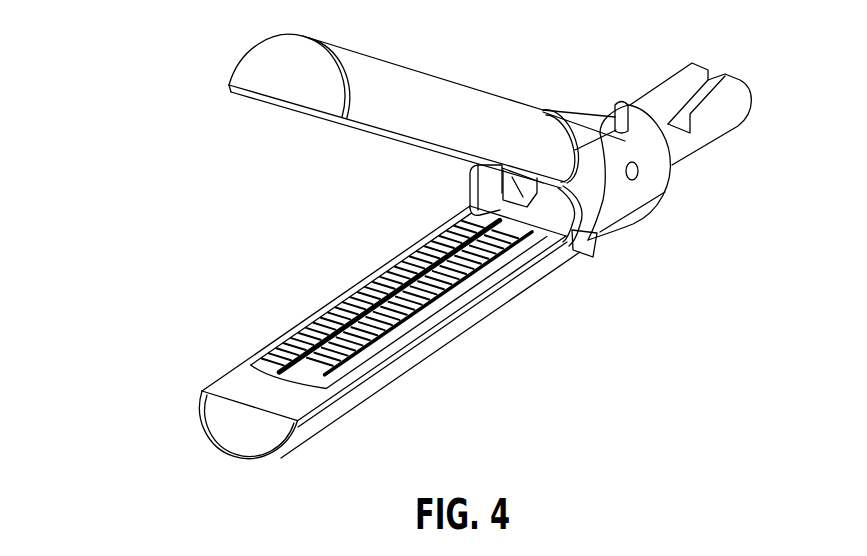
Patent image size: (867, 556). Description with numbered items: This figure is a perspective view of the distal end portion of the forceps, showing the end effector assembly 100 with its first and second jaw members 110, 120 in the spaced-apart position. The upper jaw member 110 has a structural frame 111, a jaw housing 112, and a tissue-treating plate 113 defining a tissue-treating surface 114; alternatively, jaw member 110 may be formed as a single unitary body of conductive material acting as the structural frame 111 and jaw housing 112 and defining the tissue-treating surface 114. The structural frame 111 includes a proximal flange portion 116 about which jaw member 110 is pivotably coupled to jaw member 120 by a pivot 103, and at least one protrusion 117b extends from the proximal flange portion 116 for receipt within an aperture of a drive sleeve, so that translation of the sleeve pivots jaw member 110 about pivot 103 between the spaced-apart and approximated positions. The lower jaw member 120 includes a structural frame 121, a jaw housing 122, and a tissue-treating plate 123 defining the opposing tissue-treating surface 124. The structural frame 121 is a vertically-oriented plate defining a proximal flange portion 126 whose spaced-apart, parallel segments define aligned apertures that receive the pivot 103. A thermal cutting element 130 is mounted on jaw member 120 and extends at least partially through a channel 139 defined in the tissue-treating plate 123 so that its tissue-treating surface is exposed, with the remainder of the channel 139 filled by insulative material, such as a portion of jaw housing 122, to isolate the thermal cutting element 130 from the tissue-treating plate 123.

The end effector assembly 100 is at (170, 164).
The first jaw member 110 is at (224, 35).
The jaw housing 112 is at (402, 66).
The tissue-treating plate 113 is at (287, 104).
The tissue-treating surface 114 is at (344, 132).
The proximal flange portion 116 is at (572, 122).
The structural frame 111 is at (592, 127).
The structural frame 121 is at (640, 192).
The pivot 103 is at (640, 171).
The proximal flange portion 126 is at (620, 207).
The protrusion 117b is at (592, 258).
The second jaw member 120 is at (179, 379).
The jaw housing 122 is at (331, 417).
The tissue-treating plate 123 is at (240, 388).
The tissue-treating surface 124 is at (264, 371).
The thermal cutting element 130 is at (445, 277).
The channel 139 is at (368, 297).